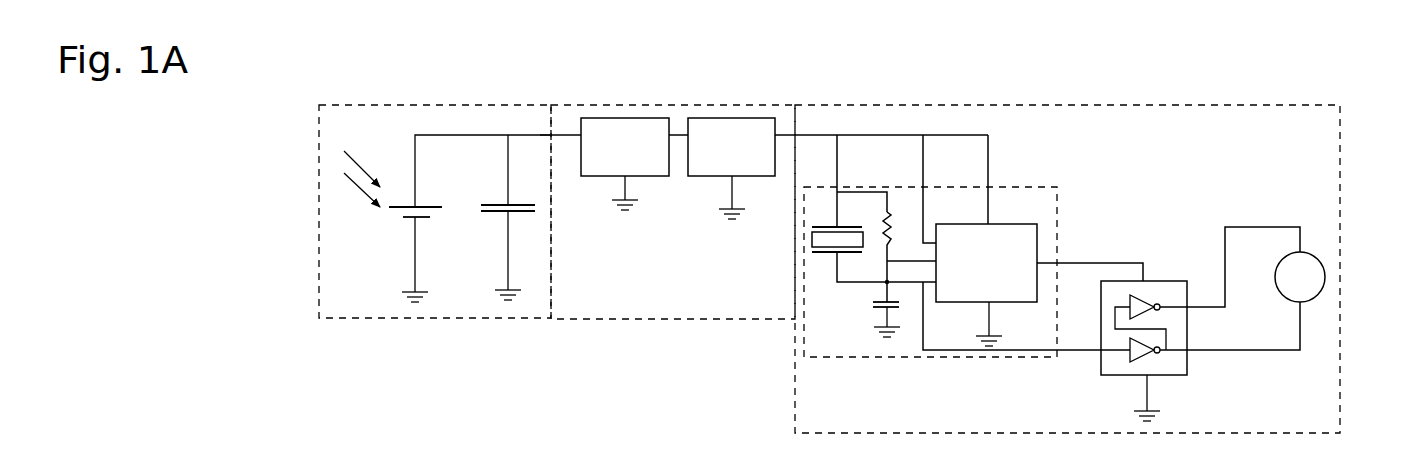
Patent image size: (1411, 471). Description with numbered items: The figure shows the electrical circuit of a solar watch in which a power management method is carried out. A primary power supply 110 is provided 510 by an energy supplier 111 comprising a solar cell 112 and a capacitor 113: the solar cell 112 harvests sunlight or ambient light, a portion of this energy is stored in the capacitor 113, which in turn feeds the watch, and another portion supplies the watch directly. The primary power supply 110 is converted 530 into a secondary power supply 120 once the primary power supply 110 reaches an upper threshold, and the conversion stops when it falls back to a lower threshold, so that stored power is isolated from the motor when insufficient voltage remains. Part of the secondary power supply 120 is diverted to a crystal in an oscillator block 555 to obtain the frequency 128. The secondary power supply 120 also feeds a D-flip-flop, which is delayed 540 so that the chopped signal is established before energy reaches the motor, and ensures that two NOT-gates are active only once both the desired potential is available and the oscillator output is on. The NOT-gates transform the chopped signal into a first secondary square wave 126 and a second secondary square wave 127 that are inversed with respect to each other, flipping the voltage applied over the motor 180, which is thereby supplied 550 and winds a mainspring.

The primary power supply 110 is at (540, 131).
The energy supplier 111 is at (426, 265).
The solar cell 112 is at (401, 220).
The capacitor 113 is at (488, 213).
The secondary power supply 120 is at (782, 133).
The first secondary square wave 126 is at (1268, 227).
The second secondary square wave 127 is at (1245, 352).
The frequency 128 is at (870, 287).
The motor 180 is at (1325, 280).
The providing a primary power supply 510 is at (372, 303).
The converting 530 is at (603, 303).
The delay 540 is at (1009, 298).
The supplying the motor 550 is at (1327, 418).
The oscillator circuit 555 is at (1023, 187).